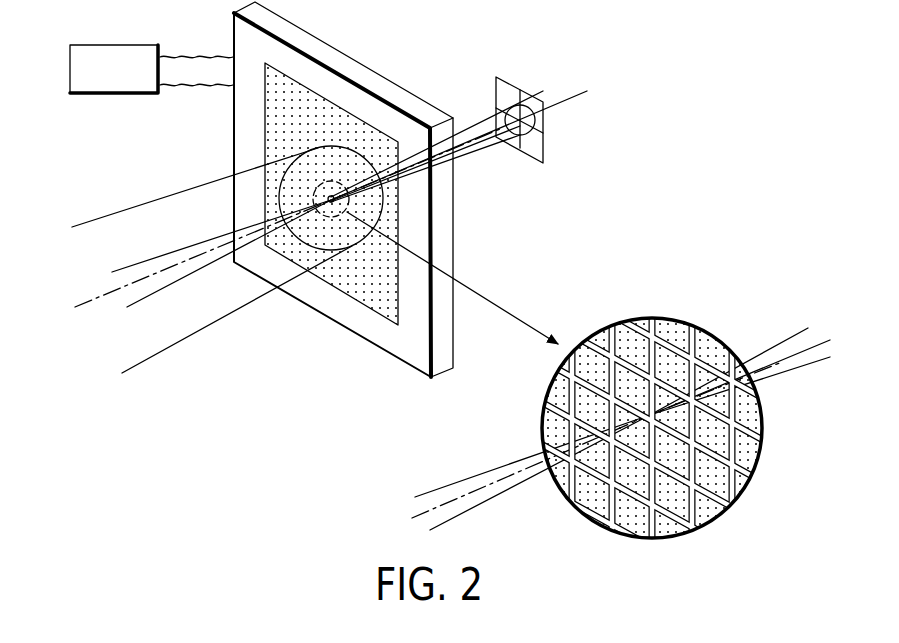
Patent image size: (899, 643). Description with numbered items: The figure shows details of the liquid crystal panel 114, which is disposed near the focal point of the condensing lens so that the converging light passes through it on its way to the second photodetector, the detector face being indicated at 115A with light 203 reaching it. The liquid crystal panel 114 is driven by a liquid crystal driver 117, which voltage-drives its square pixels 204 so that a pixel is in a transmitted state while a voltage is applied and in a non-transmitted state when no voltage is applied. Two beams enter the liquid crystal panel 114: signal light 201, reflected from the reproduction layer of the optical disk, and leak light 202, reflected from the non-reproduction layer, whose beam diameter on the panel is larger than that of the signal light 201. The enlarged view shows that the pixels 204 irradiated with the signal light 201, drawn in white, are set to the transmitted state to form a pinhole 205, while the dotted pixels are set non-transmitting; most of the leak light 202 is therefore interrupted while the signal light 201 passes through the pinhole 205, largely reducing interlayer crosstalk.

The liquid crystal driver 117 is at (125, 44).
The liquid crystal panel 114 is at (374, 298).
The leak light 202 is at (159, 197).
The signal light 201 is at (130, 265).
The diffracted light 203 is at (564, 99).
The detector screen 115A is at (538, 142).
The pixels 204 is at (713, 353).
The pinhole 205 is at (673, 458).